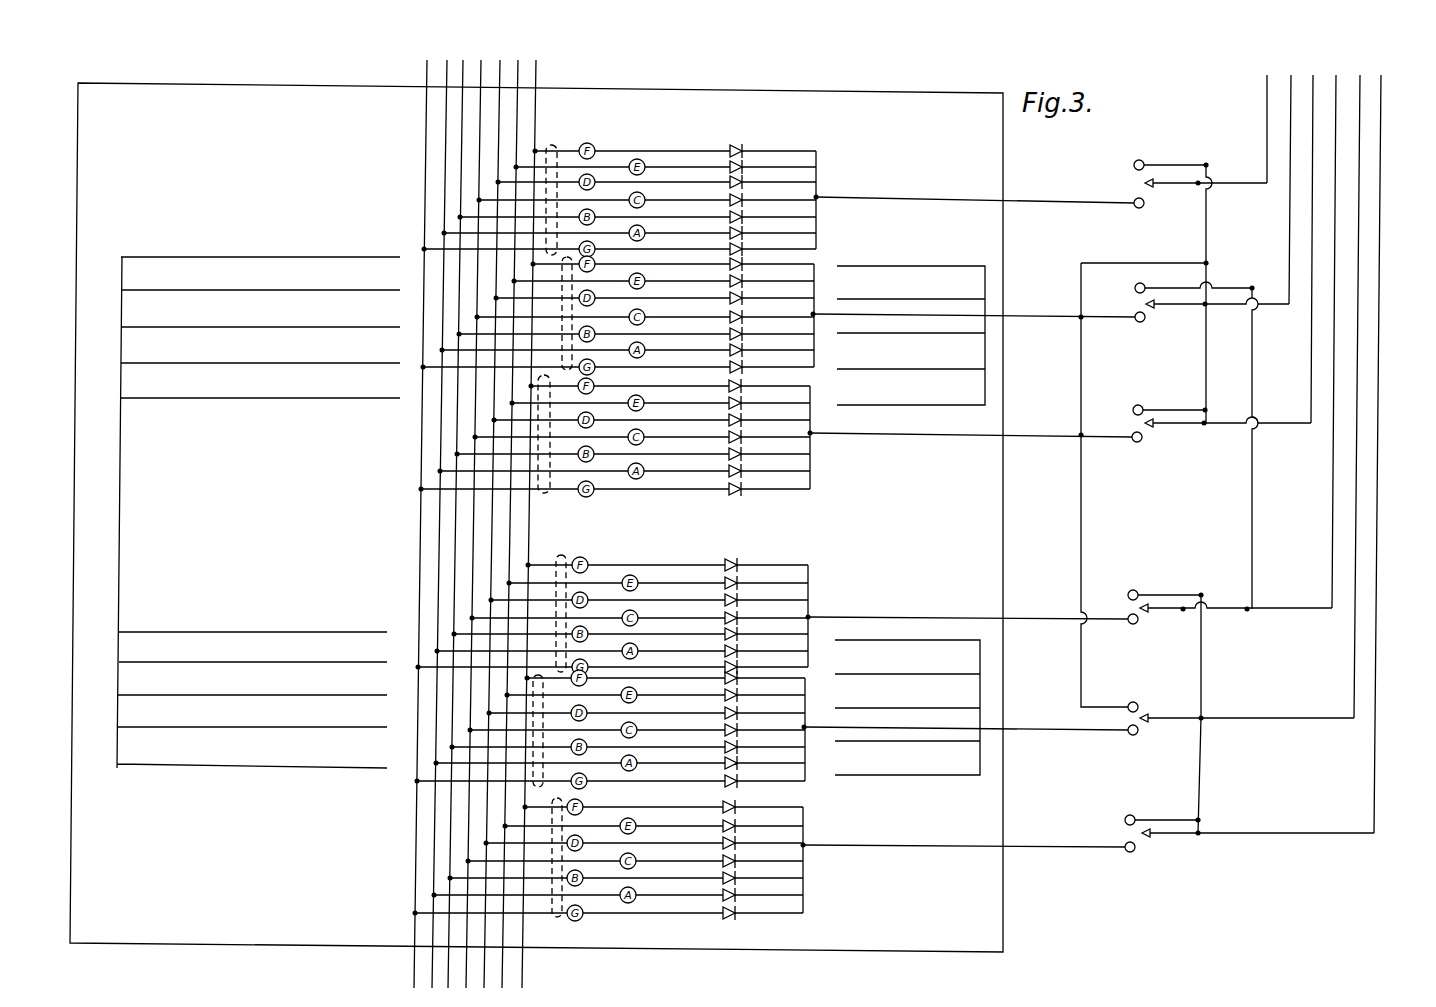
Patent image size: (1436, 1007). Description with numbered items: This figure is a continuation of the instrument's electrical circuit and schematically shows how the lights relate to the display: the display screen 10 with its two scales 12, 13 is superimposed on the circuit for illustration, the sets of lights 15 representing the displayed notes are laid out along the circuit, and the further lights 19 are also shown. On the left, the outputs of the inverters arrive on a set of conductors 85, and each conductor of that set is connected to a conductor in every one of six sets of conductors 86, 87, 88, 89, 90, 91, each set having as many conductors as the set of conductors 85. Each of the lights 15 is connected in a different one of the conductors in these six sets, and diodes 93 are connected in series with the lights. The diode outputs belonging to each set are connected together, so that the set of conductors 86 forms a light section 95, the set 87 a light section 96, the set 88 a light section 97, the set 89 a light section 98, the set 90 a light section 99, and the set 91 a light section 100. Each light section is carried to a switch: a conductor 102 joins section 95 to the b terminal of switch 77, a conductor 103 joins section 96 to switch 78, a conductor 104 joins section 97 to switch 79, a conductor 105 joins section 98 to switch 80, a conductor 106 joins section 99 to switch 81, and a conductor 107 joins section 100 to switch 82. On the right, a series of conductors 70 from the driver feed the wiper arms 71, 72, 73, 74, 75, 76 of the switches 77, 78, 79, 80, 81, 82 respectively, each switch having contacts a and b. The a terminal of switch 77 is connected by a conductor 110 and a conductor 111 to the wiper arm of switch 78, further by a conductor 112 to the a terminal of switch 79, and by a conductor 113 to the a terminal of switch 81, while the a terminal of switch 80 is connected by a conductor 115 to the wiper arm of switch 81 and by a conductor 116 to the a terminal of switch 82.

The display screen 10 is at (97, 222).
The scale 12 is at (990, 259).
The scale 13 is at (992, 663).
The lights 15 is at (616, 926).
The lights 19 is at (291, 232).
The conductors 70 is at (1313, 135).
The wiper arm 71 is at (1175, 186).
The wiper arm 72 is at (1173, 308).
The wiper arm 73 is at (1185, 425).
The wiper arm 74 is at (1167, 612).
The wiper arm 75 is at (1175, 722).
The wiper arm 76 is at (1180, 836).
The switch 77 is at (1124, 177).
The switch 78 is at (1125, 331).
The switch 79 is at (1125, 450).
The switch 80 is at (1124, 605).
The switch 81 is at (1143, 741).
The switch 82 is at (1120, 831).
The conductors 85 is at (425, 148).
The set of conductors 86 is at (553, 145).
The set of conductors 87 is at (563, 372).
The set of conductors 88 is at (545, 497).
The set of conductors 89 is at (570, 555).
The set of conductors 90 is at (543, 785).
The set of conductors 91 is at (557, 918).
The diodes 93 is at (734, 142).
The light section 95 is at (830, 188).
The light section 96 is at (824, 286).
The light section 97 is at (821, 450).
The light section 98 is at (822, 606).
The light section 99 is at (821, 713).
The light section 100 is at (815, 858).
The conductor 102 is at (1013, 200).
The conductor 103 is at (1013, 315).
The conductor 104 is at (1025, 438).
The conductor 105 is at (1043, 617).
The conductor 106 is at (1055, 728).
The conductor 107 is at (1033, 848).
The conductor 110 is at (1206, 237).
The conductor 111 is at (1206, 273).
The conductor 112 is at (1206, 375).
The conductor 113 is at (1081, 492).
The conductor 115 is at (1201, 675).
The conductor 116 is at (1198, 780).